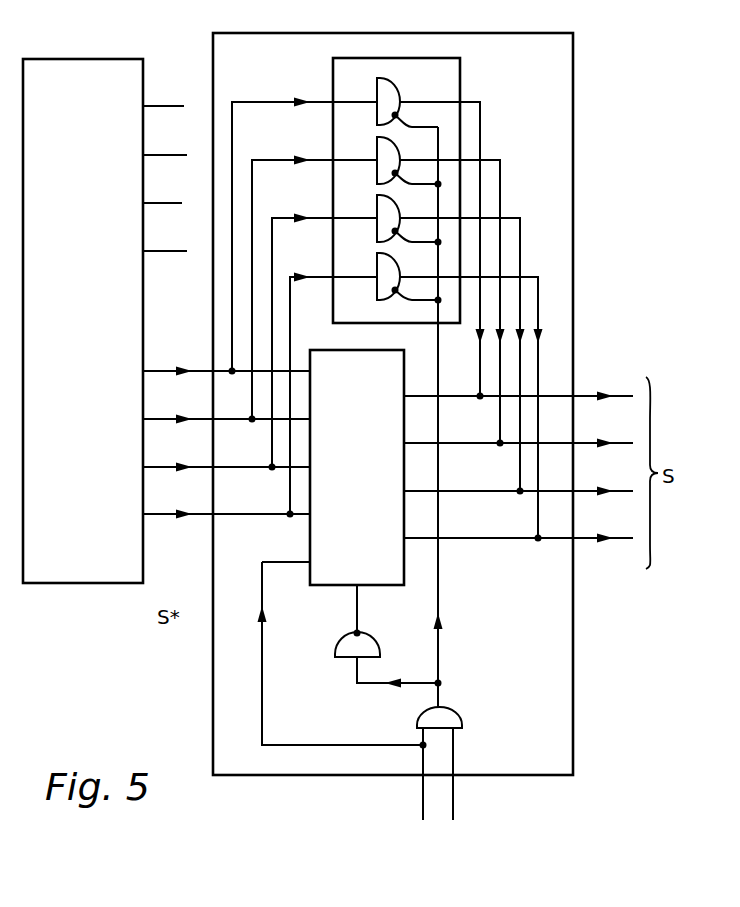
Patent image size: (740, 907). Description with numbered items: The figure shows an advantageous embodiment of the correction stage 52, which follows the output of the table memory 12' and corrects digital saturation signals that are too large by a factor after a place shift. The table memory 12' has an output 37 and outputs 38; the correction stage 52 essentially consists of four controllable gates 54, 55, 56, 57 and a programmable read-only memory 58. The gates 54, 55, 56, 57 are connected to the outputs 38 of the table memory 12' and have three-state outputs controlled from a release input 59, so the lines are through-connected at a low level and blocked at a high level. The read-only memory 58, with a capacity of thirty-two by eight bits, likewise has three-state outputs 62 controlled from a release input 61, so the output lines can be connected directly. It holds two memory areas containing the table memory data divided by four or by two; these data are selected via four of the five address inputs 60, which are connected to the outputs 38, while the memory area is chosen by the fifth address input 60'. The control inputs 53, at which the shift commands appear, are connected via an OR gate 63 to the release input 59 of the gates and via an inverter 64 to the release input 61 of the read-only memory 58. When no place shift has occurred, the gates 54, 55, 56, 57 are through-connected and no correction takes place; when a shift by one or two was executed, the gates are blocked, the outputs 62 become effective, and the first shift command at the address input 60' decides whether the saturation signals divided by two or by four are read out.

The table memory 12' is at (83, 295).
The output of the table memory 37 is at (157, 185).
The outputs of the table memory 38 is at (155, 440).
The correction stage 52 is at (557, 84).
The control inputs 53 is at (441, 785).
The controllable gate 54 is at (399, 95).
The controllable gate 55 is at (387, 158).
The controllable gate 56 is at (387, 216).
The controllable gate 57 is at (387, 275).
The programmable read-only memory 58 is at (344, 569).
The release input 59 is at (440, 328).
The address inputs 60 is at (325, 592).
The fifth address input 60' is at (285, 544).
The release input of the read-only memory 61 is at (361, 592).
The outputs of the read-only memory 62 is at (418, 475).
The OR gate 63 is at (452, 711).
The inverter 64 is at (341, 661).